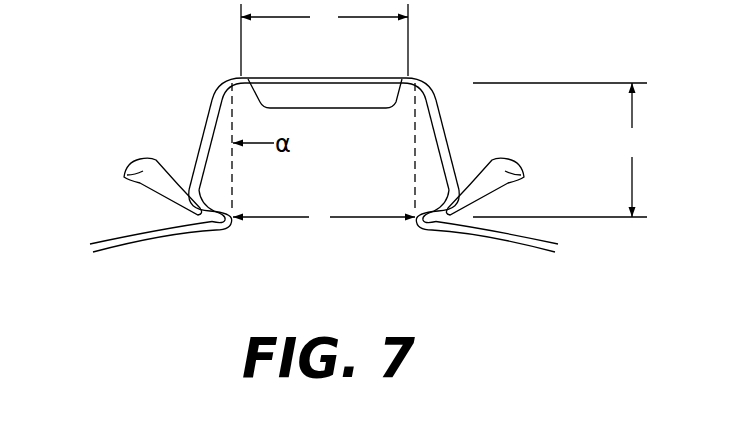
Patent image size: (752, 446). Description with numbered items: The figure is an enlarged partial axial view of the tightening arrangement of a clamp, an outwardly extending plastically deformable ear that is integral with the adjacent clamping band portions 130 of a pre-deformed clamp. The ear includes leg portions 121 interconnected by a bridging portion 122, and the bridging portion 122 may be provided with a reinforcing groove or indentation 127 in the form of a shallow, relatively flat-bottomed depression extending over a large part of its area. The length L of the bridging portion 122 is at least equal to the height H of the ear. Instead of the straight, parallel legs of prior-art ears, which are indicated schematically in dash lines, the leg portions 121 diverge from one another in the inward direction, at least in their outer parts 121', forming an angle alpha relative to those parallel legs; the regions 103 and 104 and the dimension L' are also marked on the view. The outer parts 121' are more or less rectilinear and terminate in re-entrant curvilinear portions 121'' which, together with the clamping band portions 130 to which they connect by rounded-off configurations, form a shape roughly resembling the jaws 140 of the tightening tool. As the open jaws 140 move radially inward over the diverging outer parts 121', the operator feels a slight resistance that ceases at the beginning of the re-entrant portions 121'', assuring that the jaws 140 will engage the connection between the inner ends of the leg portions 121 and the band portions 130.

The leg portions 121 is at (335, 135).
The outer parts of the leg portions 121' is at (330, 74).
The re-entrant curvilinear portions 121'' is at (324, 244).
The bridging portion 122 is at (280, 78).
The reinforcing groove or indentation 127 is at (333, 97).
The first region 103 is at (233, 160).
The second region 104 is at (414, 151).
The clamping band portions 130 is at (166, 236).
The jaws of the tightening tool 140 is at (124, 176).
The length of the bridging portion L is at (324, 40).
The width between hooked ends L' is at (324, 218).
The height of the ear H is at (560, 150).